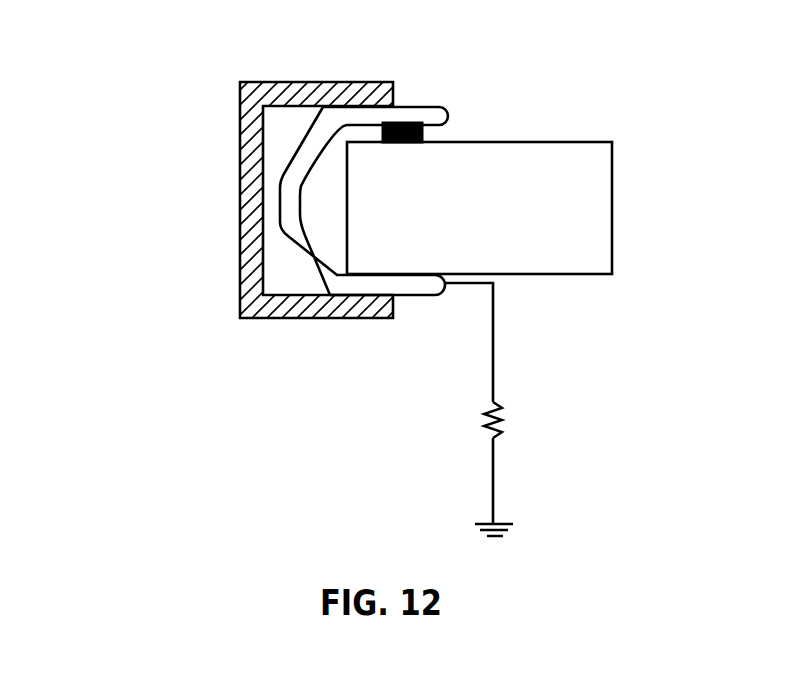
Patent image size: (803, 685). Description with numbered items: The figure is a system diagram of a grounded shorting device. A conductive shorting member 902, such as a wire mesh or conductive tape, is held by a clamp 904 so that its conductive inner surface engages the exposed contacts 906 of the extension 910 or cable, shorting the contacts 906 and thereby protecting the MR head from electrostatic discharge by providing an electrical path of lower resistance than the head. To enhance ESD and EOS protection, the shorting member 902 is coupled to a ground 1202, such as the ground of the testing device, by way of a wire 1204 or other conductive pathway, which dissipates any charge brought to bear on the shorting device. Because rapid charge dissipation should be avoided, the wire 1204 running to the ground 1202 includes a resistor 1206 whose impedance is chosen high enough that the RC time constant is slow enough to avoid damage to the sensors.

The conductive shorting member 902 is at (446, 110).
The clamp 904 is at (240, 90).
The exposed contacts 906 is at (425, 133).
The extension 910 is at (535, 253).
The wire 1204 is at (493, 338).
The resistor 1206 is at (512, 417).
The ground 1202 is at (520, 527).